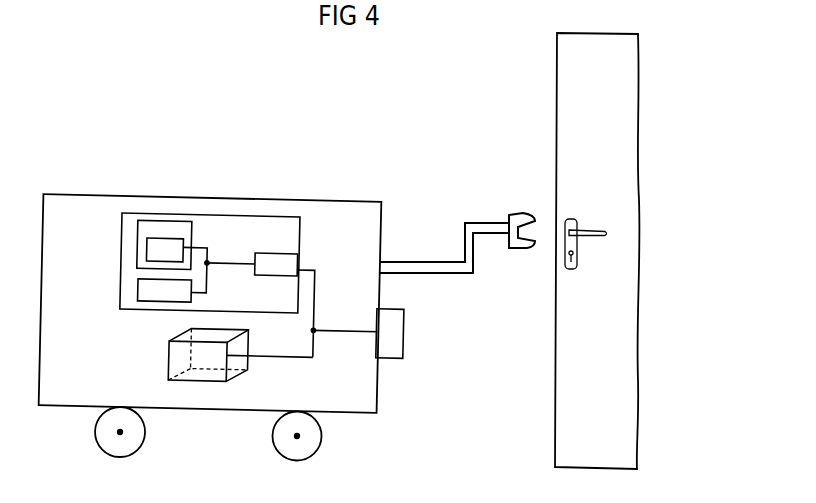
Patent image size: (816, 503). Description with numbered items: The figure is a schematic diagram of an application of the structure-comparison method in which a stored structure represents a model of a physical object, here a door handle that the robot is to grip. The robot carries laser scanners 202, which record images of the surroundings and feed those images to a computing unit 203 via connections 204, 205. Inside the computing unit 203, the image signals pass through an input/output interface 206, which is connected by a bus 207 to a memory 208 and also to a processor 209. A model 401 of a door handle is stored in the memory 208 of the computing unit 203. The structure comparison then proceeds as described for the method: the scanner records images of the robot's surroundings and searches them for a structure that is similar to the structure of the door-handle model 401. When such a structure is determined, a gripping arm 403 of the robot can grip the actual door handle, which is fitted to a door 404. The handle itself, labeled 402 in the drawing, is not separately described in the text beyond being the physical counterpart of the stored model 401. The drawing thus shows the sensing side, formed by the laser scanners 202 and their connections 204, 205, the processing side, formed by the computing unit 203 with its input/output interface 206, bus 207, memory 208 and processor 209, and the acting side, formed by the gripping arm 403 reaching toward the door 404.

The laser scanner 202 is at (171, 357).
The computing unit 203 is at (293, 236).
The connection 204 is at (275, 356).
The connection 205 is at (343, 329).
The input/output interface 206 is at (276, 264).
The bus 207 is at (207, 283).
The memory 208 is at (184, 231).
The processor 209 is at (165, 289).
The door-handle model 401 is at (164, 250).
The door handle 402 is at (581, 224).
The gripping arm 403 is at (425, 262).
The door 404 is at (565, 80).